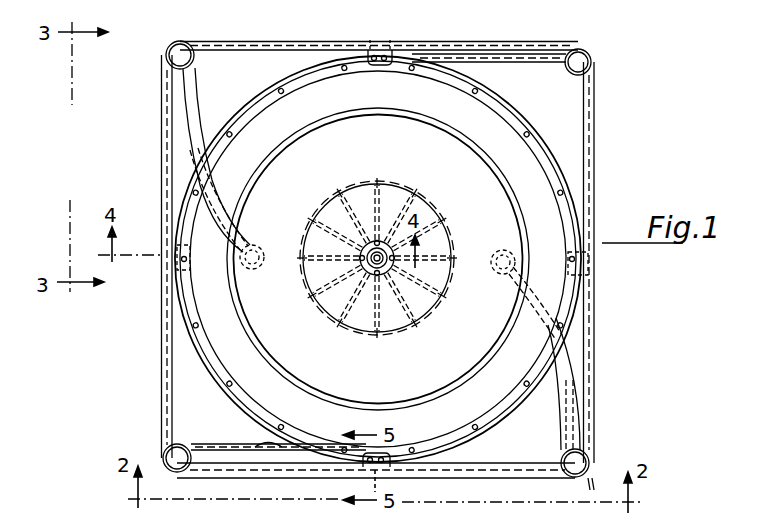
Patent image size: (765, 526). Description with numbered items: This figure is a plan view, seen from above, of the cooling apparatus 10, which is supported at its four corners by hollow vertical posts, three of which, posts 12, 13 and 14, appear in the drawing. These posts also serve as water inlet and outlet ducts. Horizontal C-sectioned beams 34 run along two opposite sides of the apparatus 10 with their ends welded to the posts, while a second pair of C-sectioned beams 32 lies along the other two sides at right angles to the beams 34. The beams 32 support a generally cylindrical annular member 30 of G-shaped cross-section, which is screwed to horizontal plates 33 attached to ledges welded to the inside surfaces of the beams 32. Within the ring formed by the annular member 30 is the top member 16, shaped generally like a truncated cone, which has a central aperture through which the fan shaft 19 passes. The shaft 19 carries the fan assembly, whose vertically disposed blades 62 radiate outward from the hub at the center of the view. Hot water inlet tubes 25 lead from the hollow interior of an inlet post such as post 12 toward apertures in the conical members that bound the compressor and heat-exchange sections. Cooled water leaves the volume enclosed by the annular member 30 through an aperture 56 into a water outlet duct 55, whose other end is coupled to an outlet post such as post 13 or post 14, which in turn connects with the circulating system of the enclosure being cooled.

The cooling apparatus 10 is at (618, 172).
The hollow vertical post 12 is at (173, 45).
The hollow vertical post 13 is at (591, 57).
The hollow vertical post 14 is at (169, 471).
The top member 16 is at (229, 333).
The fan shaft 19 is at (371, 276).
The hot water inlet tube 25 is at (205, 119).
The cylindrical annular member 30 is at (505, 418).
The horizontal C-sectioned beam 32 is at (165, 308).
The horizontal plate 33 is at (190, 246).
The horizontal C-sectioned beam 34 is at (263, 41).
The water outlet duct 55 is at (537, 63).
The aperture 56 is at (268, 442).
The blade 62 is at (385, 240).